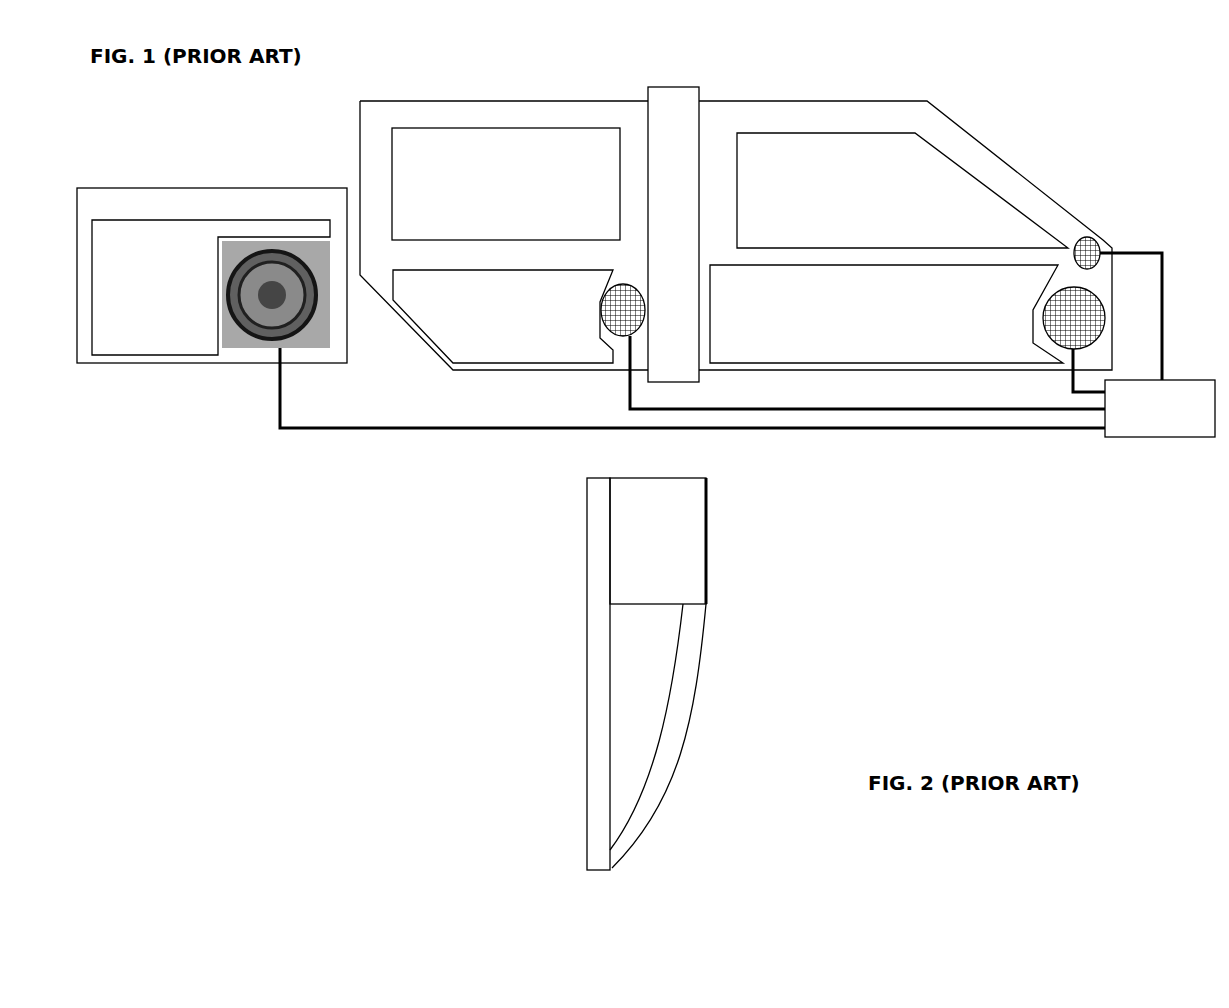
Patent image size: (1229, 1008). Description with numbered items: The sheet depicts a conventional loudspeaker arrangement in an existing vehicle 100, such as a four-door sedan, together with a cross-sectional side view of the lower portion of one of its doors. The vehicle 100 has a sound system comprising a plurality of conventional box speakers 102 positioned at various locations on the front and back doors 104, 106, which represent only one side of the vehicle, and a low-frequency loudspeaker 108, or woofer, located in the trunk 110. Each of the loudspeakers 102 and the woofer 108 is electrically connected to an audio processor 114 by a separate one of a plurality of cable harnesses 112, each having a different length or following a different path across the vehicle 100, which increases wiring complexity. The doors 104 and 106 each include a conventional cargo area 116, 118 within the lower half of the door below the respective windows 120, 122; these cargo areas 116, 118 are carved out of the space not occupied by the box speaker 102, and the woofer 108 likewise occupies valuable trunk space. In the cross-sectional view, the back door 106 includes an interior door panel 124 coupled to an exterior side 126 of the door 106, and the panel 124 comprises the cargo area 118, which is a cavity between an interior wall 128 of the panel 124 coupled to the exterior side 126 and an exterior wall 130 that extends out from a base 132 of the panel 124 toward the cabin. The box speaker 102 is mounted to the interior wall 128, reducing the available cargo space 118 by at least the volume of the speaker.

In FIG. 1, the vehicle 100 is at (1075, 87).
In FIG. 1, the box speaker 102 is at (600, 325).
In FIG. 2, the box speaker 102 is at (706, 500).
In FIG. 1, the front door 104 is at (885, 101).
In FIG. 1, the back door 106 is at (488, 100).
In FIG. 1, the low-frequency loudspeaker 108 is at (250, 337).
In FIG. 1, the trunk 110 is at (137, 187).
In FIG. 1, the cable harness 112 is at (1162, 320).
In FIG. 1, the audio processor 114 is at (1200, 437).
In FIG. 1, the cargo area 116 is at (810, 335).
In FIG. 1, the cargo area 118 is at (472, 340).
In FIG. 2, the cargo area 118 is at (652, 625).
In FIG. 1, the window 120 is at (733, 182).
In FIG. 1, the window 122 is at (620, 152).
In FIG. 2, the interior door panel 124 is at (598, 713).
In FIG. 2, the exterior side 126 is at (587, 590).
In FIG. 2, the interior wall 128 is at (608, 777).
In FIG. 2, the exterior wall 130 is at (693, 700).
In FIG. 2, the base 132 is at (622, 872).